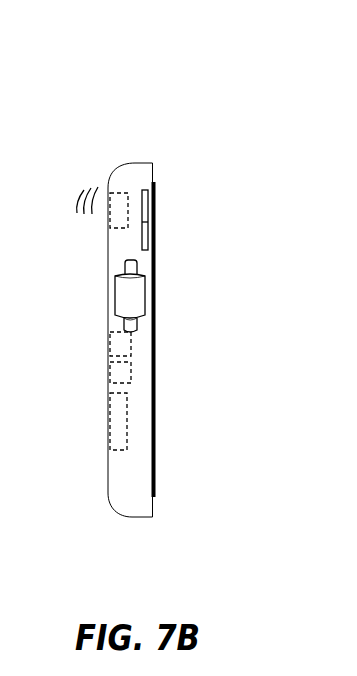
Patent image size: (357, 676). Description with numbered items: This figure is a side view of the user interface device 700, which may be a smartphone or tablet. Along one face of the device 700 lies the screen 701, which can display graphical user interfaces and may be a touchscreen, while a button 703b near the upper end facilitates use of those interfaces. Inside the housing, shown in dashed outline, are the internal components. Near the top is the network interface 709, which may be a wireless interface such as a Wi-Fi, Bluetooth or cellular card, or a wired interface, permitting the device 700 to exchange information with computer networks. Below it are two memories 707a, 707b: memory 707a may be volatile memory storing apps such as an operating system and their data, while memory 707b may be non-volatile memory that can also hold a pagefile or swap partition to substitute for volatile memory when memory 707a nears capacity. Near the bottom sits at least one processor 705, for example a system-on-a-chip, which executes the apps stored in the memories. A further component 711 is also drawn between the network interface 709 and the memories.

The smartphone 700 is at (141, 28).
The screen 701 is at (153, 262).
The button 703b is at (147, 207).
The processor 705 is at (115, 425).
The memory 707a is at (113, 343).
The memory 707b is at (113, 370).
The network interface 709 is at (115, 218).
The motor / actuator 711 is at (120, 289).